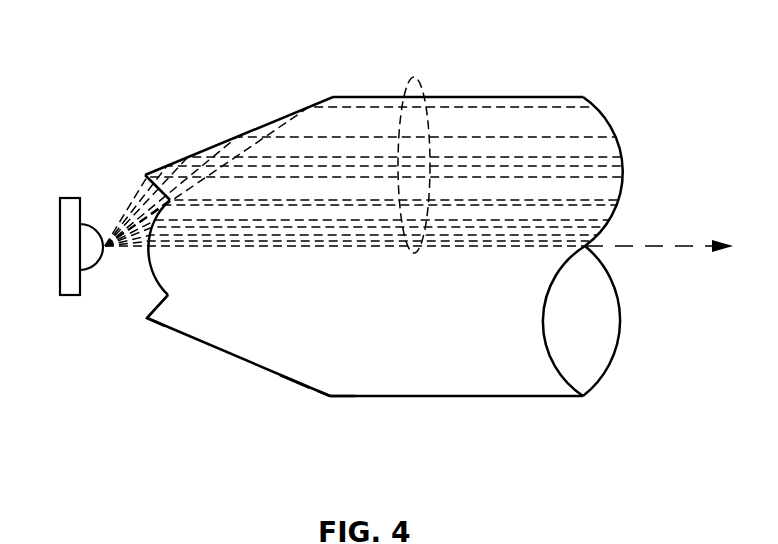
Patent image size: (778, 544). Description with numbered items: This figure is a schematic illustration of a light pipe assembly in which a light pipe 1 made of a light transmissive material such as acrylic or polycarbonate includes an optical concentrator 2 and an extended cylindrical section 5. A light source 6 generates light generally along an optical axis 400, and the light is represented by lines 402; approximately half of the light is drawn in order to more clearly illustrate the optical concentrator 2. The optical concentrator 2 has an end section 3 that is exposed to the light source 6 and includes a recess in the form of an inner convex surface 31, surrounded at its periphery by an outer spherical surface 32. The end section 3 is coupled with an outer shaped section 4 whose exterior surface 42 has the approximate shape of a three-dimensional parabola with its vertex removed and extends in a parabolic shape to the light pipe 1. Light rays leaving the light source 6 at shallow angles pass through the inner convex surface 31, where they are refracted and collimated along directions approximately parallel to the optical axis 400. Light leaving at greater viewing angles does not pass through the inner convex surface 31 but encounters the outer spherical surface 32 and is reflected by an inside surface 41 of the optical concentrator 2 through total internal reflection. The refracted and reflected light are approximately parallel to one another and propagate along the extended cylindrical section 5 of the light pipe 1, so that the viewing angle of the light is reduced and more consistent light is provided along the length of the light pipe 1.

The light pipe 1 is at (600, 490).
The optical concentrator 2 is at (270, 372).
The end section 3 is at (146, 318).
The outer shaped section 4 is at (230, 335).
The extended cylindrical section 5 is at (542, 397).
The light source 6 is at (100, 228).
The inner convex surface 31 is at (160, 279).
The outer spherical surface 32 is at (157, 308).
The inside surface 41 is at (295, 380).
The exterior surface 42 is at (318, 393).
The optical axis 400 is at (669, 248).
The lines 402 is at (415, 77).